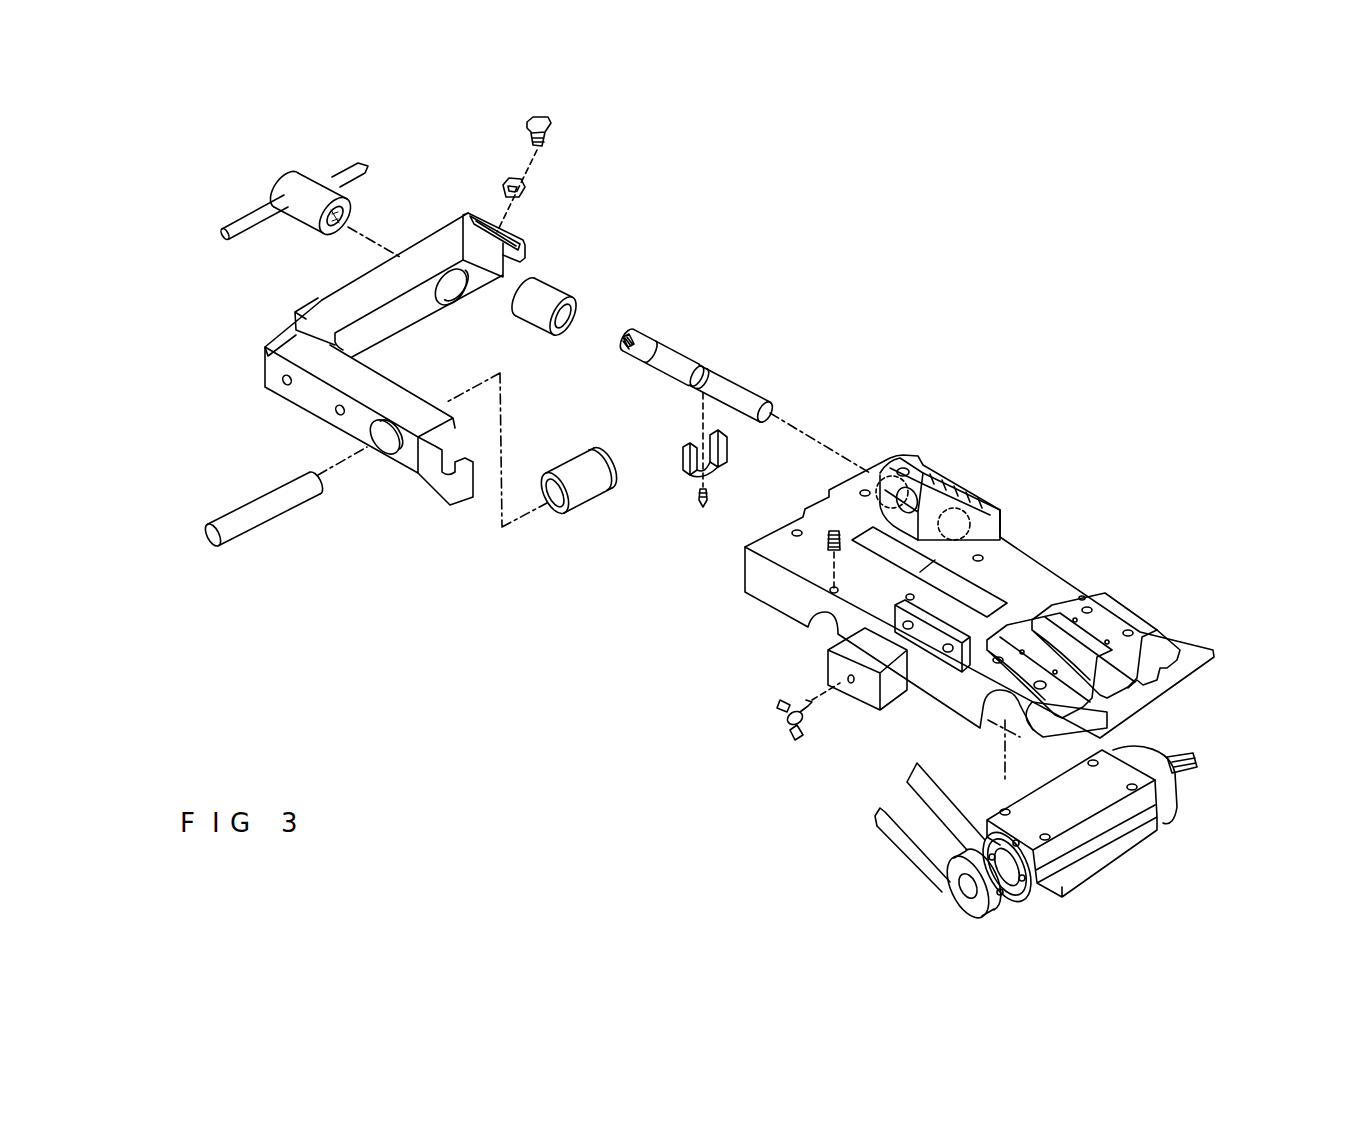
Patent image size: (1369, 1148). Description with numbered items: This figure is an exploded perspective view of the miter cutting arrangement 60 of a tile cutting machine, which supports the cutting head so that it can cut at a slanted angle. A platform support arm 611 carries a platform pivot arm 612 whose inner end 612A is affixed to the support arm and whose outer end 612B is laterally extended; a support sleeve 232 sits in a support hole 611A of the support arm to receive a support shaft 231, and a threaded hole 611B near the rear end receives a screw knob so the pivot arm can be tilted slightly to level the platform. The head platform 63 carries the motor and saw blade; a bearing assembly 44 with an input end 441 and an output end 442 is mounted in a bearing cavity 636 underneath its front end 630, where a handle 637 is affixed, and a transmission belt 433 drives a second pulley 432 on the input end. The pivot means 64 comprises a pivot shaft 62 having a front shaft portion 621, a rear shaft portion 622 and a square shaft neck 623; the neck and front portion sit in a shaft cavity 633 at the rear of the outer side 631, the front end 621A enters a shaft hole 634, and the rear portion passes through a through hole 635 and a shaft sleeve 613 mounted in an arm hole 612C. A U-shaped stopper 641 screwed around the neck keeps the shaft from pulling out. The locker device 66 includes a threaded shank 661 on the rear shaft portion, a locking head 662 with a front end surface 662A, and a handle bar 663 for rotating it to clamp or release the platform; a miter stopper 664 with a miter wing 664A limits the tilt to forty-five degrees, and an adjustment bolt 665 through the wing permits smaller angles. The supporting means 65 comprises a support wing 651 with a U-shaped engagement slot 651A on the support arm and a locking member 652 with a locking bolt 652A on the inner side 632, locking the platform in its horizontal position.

The miter cutting arrangement 60 is at (968, 217).
The pivot shaft 62 is at (738, 338).
The head platform 63 is at (1083, 647).
The pivot means 64 is at (943, 284).
The supporting means 65 is at (790, 845).
The locker device 66 is at (253, 167).
The bearing assembly 44 is at (1127, 828).
The input end 441 is at (1022, 898).
The output end 442 is at (1183, 750).
The second pulley 432 is at (973, 900).
The transmission belt 433 is at (950, 818).
The support shaft 231 is at (240, 527).
The support sleeve 232 is at (585, 497).
The platform support arm 611 is at (313, 403).
The support hole 611A is at (390, 443).
The threaded hole 611B is at (283, 388).
The platform pivot arm 612 is at (427, 313).
The inner end 612A is at (338, 350).
The outer end 612B is at (433, 247).
The arm hole 612C is at (457, 300).
The shaft sleeve 613 is at (552, 293).
The front shaft portion 621 is at (720, 363).
The front end 621A is at (767, 410).
The rear shaft portion 622 is at (655, 340).
The shaft neck 623 is at (693, 392).
The front end 630 is at (1180, 687).
The outer side 631 is at (867, 470).
The inner side 632 is at (765, 610).
The shaft cavity 633 is at (927, 510).
The shaft hole 634 is at (980, 498).
The through hole 635 is at (903, 503).
The bearing cavity 636 is at (1005, 738).
The handle 637 is at (1200, 657).
The U-shaped stopper 641 is at (720, 465).
The support wing 651 is at (452, 485).
The engagement slot 651A is at (467, 443).
The locking member 652 is at (773, 715).
The locking bolt 652A is at (800, 728).
The threaded shank 661 is at (635, 333).
The locking head 662 is at (305, 178).
The front end surface 662A is at (338, 233).
The handle bar 663 is at (258, 215).
The miter stopper 664 is at (535, 255).
The miter wing 664A is at (500, 228).
The adjustment bolt 665 is at (550, 125).